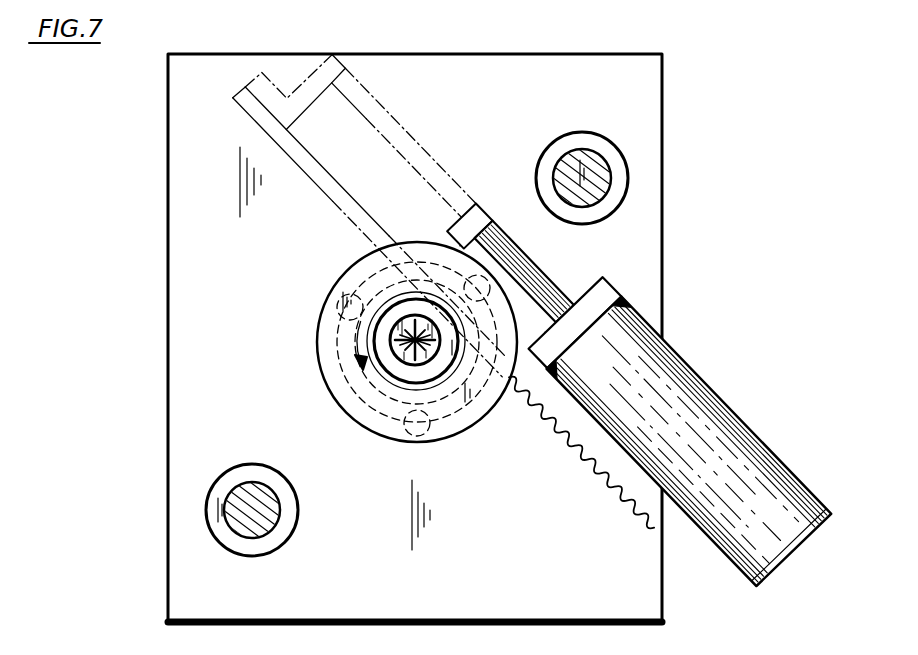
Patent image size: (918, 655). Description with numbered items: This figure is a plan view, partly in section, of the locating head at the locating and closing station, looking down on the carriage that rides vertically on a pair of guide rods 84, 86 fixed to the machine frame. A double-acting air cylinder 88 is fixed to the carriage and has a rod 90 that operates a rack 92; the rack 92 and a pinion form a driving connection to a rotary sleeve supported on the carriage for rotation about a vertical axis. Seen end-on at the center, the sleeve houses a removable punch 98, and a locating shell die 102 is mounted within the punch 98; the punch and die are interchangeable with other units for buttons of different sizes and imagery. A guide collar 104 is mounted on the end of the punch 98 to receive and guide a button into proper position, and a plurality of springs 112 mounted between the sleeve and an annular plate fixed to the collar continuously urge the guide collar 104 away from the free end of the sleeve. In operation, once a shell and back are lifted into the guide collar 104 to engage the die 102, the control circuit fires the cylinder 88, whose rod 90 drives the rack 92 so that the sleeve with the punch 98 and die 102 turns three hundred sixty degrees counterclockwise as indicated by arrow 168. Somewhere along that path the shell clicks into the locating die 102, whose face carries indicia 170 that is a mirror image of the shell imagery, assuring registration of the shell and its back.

The guide rod 84 is at (223, 510).
The guide rod 86 is at (610, 173).
The double-acting air cylinder 88 is at (690, 367).
The rod 90 is at (548, 278).
The rack 92 is at (630, 512).
The punch 98 is at (387, 312).
The locating shell die 102 is at (440, 358).
The guide collar 104 is at (317, 342).
The springs 112 is at (447, 428).
The arrow 168 is at (362, 342).
The indicia 170 is at (403, 356).